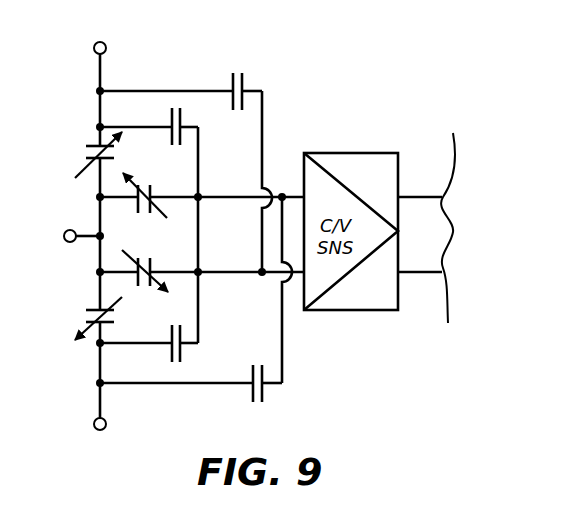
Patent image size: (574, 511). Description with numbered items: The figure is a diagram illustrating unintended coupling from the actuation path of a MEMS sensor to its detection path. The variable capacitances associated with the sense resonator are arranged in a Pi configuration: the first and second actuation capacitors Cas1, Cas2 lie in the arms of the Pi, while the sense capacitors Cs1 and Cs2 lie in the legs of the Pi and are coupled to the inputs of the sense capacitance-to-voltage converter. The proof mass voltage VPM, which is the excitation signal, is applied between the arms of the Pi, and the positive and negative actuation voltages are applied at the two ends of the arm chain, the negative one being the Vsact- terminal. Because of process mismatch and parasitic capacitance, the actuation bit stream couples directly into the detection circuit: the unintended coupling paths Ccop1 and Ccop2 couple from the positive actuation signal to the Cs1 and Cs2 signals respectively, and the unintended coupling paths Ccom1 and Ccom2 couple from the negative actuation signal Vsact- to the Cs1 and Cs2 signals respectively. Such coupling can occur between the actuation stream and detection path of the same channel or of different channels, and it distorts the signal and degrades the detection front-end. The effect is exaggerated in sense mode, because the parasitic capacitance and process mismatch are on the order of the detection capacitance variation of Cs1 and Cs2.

The negative sense actuation voltage Vsact- is at (140, 429).
The proof mass voltage VPM is at (67, 221).
The second actuation capacitor Cas2 is at (88, 148).
The first actuation capacitor Cas1 is at (90, 310).
The second sense capacitor Cs2 is at (202, 191).
The first sense capacitor Cs1 is at (202, 282).
The unintended coupling path capacitance Ccop1 is at (163, 220).
The unintended coupling path capacitance Ccop2 is at (198, 168).
The unintended coupling path capacitance Ccom1 is at (167, 351).
The unintended coupling path capacitance Ccom2 is at (211, 306).